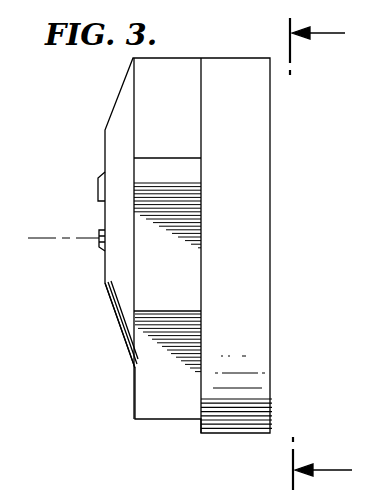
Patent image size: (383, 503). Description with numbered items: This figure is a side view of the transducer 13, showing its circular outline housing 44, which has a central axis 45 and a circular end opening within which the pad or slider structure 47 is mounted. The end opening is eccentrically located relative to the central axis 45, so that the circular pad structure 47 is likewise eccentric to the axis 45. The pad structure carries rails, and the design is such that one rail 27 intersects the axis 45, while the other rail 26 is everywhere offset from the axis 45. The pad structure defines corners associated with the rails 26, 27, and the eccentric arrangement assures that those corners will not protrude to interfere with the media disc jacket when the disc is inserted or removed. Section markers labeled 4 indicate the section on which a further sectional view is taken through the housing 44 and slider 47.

The transducer 13 is at (172, 435).
The housing 44 is at (259, 436).
The rail 26 is at (97, 186).
The rail 27 is at (98, 248).
The central axis 45 is at (57, 237).
The pad or slider structure 47 is at (105, 295).
The section line 4- 4 is at (321, 254).